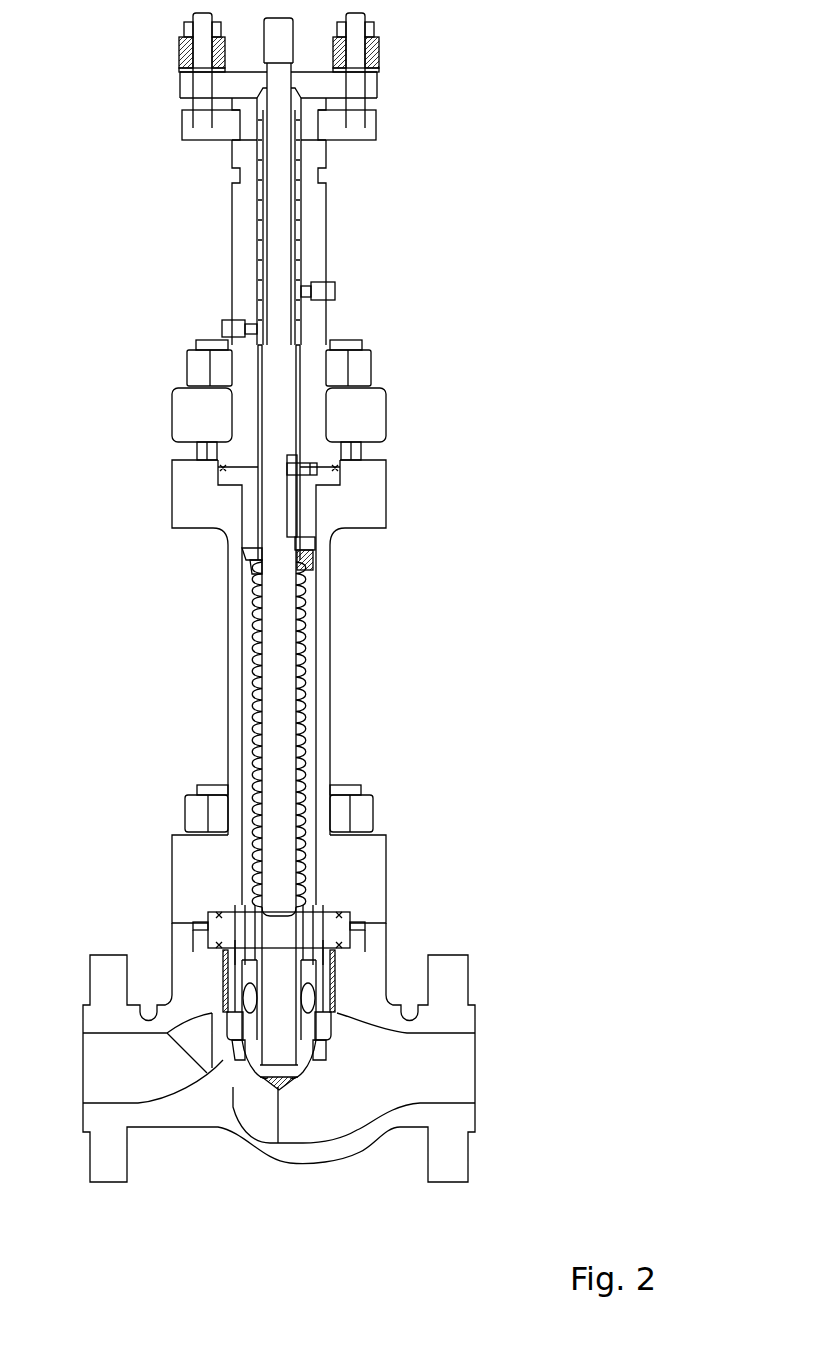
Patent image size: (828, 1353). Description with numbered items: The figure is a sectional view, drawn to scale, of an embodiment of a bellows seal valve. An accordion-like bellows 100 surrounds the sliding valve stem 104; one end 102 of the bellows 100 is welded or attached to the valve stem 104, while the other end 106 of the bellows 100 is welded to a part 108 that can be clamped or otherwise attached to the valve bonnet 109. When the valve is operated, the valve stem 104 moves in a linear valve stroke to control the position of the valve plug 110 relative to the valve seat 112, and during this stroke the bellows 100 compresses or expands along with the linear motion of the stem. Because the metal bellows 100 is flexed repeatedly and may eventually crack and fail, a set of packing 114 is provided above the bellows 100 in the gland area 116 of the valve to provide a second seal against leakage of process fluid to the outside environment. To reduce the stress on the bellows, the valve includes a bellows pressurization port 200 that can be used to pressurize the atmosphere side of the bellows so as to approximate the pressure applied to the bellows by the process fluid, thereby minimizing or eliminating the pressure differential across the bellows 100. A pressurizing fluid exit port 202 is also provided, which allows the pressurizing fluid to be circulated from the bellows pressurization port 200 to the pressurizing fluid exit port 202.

The bellows 100 is at (307, 638).
The one end of the bellows 102 is at (333, 896).
The valve stem 104 is at (283, 736).
The other end of the bellows 106 is at (248, 560).
The part 108 is at (246, 552).
The valve bonnet 109 is at (241, 211).
The valve plug 110 is at (287, 1093).
The valve seat 112 is at (330, 1078).
The packing 114 is at (300, 248).
The gland area 116 is at (325, 200).
The bellows pressurization port 200 is at (336, 293).
The pressurizing fluid exit port 202 is at (222, 327).